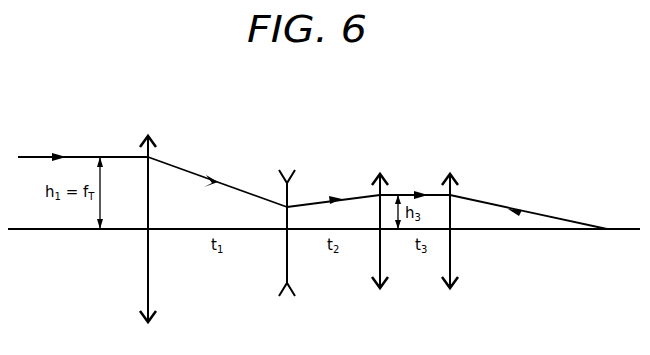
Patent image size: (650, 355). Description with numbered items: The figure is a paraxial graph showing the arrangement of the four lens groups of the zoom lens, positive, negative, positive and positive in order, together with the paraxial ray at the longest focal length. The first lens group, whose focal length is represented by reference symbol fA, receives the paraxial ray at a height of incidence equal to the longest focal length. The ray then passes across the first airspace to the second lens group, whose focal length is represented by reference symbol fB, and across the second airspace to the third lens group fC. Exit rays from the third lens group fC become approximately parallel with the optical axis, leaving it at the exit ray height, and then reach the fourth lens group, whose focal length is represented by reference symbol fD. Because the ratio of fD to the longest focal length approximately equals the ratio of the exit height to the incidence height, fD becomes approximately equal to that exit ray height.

The focal length of the first lens group fA is at (148, 242).
The focal length of the second lens group fB is at (287, 248).
The third lens group fC is at (382, 251).
The focal length of the fourth lens group fD is at (450, 251).